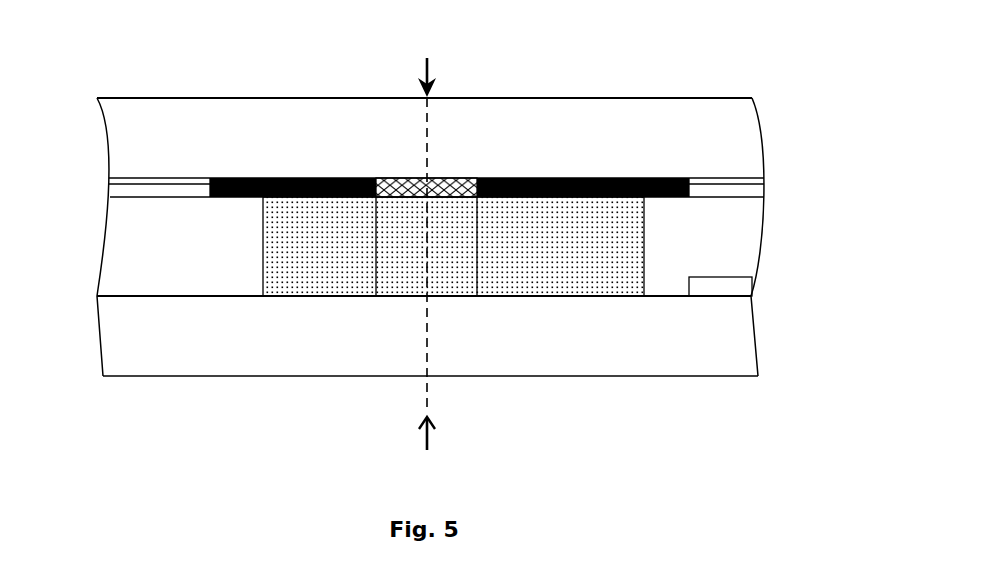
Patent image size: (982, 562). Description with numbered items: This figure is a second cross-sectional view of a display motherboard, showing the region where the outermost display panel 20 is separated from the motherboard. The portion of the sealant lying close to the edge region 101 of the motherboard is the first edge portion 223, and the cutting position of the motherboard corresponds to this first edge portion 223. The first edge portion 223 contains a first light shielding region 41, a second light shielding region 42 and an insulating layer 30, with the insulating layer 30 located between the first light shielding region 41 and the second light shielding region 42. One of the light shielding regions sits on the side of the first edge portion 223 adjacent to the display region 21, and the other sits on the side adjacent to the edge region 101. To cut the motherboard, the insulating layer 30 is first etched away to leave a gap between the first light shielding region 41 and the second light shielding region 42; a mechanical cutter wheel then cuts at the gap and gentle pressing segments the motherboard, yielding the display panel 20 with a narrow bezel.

The display panel 20 is at (427, 98).
The display region 21 is at (723, 228).
The insulating layer 30 is at (401, 187).
The first light shielding region 41 is at (764, 184).
The second light shielding region 42 is at (110, 186).
The edge region 101 is at (160, 228).
The first edge portion 223 is at (644, 267).